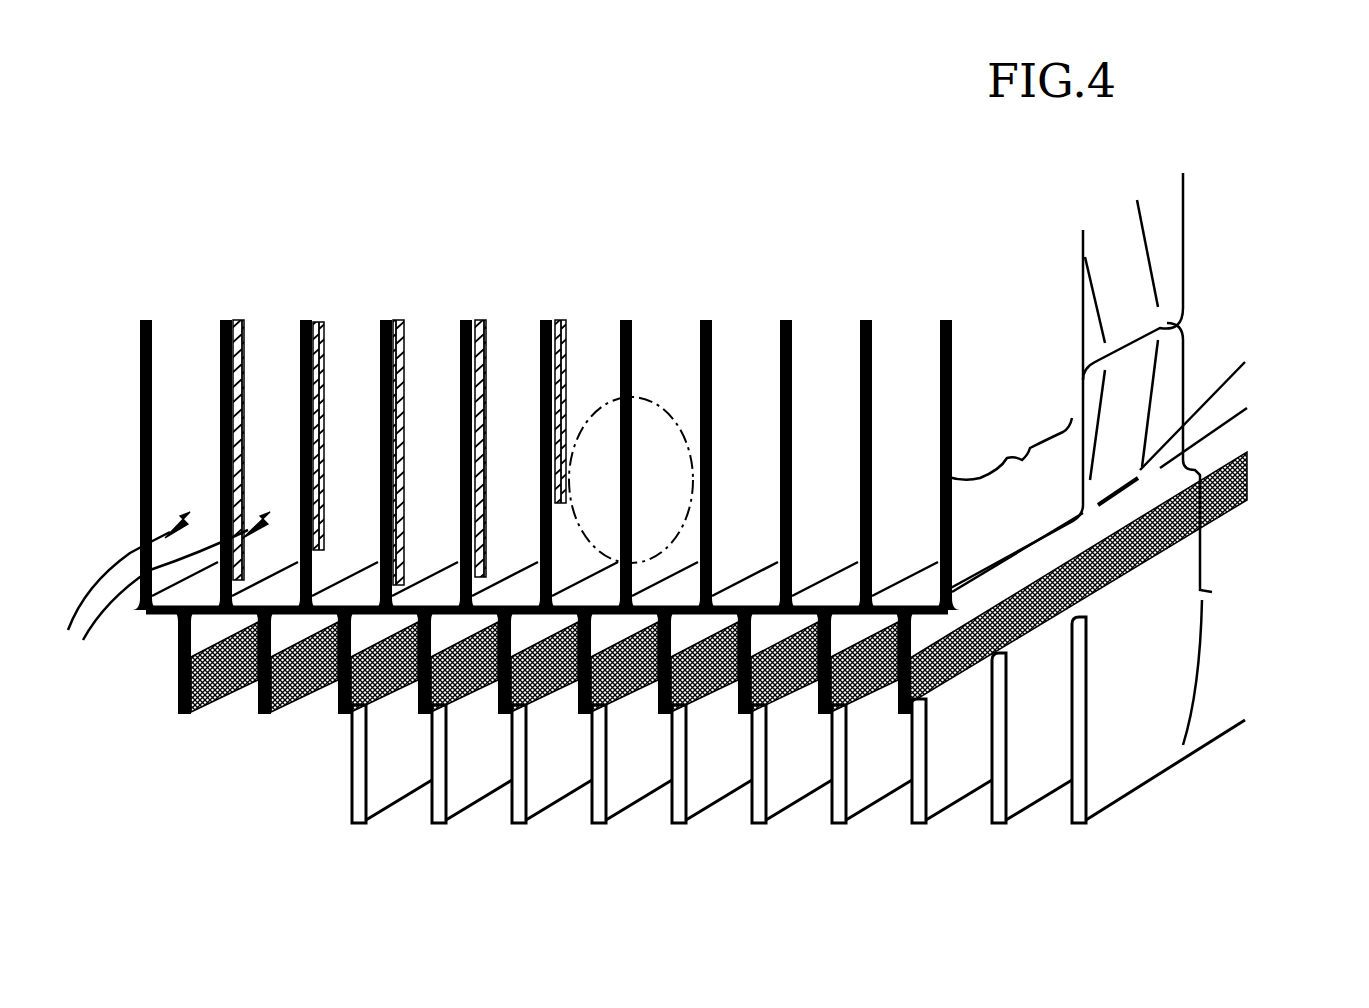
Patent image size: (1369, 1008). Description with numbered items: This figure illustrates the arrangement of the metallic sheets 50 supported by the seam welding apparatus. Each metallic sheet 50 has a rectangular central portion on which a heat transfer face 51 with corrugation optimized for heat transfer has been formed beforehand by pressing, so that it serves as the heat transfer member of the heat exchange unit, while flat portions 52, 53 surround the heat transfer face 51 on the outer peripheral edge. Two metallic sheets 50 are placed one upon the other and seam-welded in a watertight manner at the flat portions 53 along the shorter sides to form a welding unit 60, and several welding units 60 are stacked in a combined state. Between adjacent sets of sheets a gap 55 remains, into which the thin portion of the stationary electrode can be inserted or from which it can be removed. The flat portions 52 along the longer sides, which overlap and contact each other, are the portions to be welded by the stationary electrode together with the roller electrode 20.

The roller electrode 20 is at (660, 400).
The metallic sheet 50 is at (150, 618).
The heat transfer face 51 is at (1143, 318).
The flat portion 52 is at (1027, 468).
The flat portion 53 is at (1218, 593).
The gap 55 is at (165, 593).
The welding unit 60 is at (240, 835).